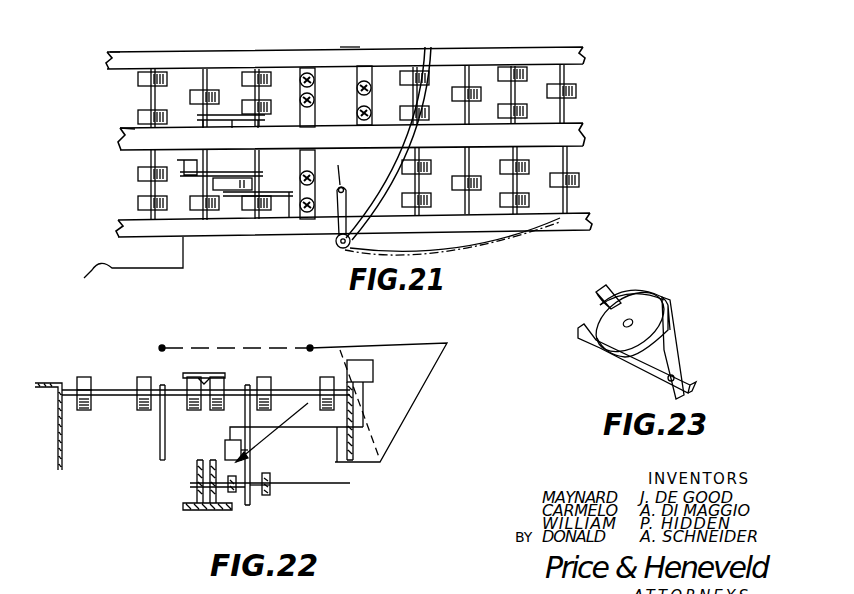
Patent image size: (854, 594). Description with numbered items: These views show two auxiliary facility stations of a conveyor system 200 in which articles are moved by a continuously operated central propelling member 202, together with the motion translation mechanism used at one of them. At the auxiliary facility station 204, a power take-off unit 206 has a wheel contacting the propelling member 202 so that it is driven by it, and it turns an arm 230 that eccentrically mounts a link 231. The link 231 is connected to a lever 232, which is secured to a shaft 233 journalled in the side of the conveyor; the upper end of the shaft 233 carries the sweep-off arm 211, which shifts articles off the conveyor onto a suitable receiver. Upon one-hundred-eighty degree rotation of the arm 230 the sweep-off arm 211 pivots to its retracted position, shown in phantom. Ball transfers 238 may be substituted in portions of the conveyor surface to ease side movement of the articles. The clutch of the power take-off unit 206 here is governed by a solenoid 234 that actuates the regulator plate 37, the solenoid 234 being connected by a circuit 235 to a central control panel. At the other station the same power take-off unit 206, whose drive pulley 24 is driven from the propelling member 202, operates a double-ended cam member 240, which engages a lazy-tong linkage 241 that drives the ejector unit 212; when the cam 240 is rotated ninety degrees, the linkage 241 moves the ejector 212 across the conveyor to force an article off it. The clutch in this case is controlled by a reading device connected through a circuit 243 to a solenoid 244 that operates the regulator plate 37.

In FIG. 21, the conveyor system 200 is at (166, 50).
In FIG. 22, the conveyor system 200 is at (95, 364).
In FIG. 21, the propelling member 202 is at (135, 134).
In FIG. 22, the propelling member 202 is at (220, 372).
In FIG. 21, the auxiliary facility station 204 is at (380, 25).
In FIG. 21, the power take-off unit 206 is at (222, 116).
In FIG. 22, the power take-off unit 206 is at (150, 463).
In FIG. 21, the sweep-off arm 211 is at (428, 47).
In FIG. 22, the ejector unit 212 is at (232, 332).
In FIG. 21, the arm 230 is at (242, 192).
In FIG. 21, the link 231 is at (290, 199).
In FIG. 21, the lever 232 is at (338, 165).
In FIG. 21, the shaft 233 is at (336, 246).
In FIG. 21, the solenoid 234 is at (150, 156).
In FIG. 21, the circuit 235 is at (116, 265).
In FIG. 21, the ball transfers 238 is at (306, 70).
In FIG. 22, the double-ended cam member 240 is at (272, 487).
In FIG. 23, the double-ended cam member 240 is at (660, 296).
In FIG. 22, the lazy-tong linkage 241 is at (322, 484).
In FIG. 23, the lazy-tong linkage 241 is at (686, 378).
In FIG. 22, the circuit 243 is at (300, 426).
In FIG. 22, the solenoid 244 is at (225, 442).
In FIG. 22, the regulator plate 37 is at (272, 432).
In FIG. 22, the drive pulley 24 is at (195, 486).